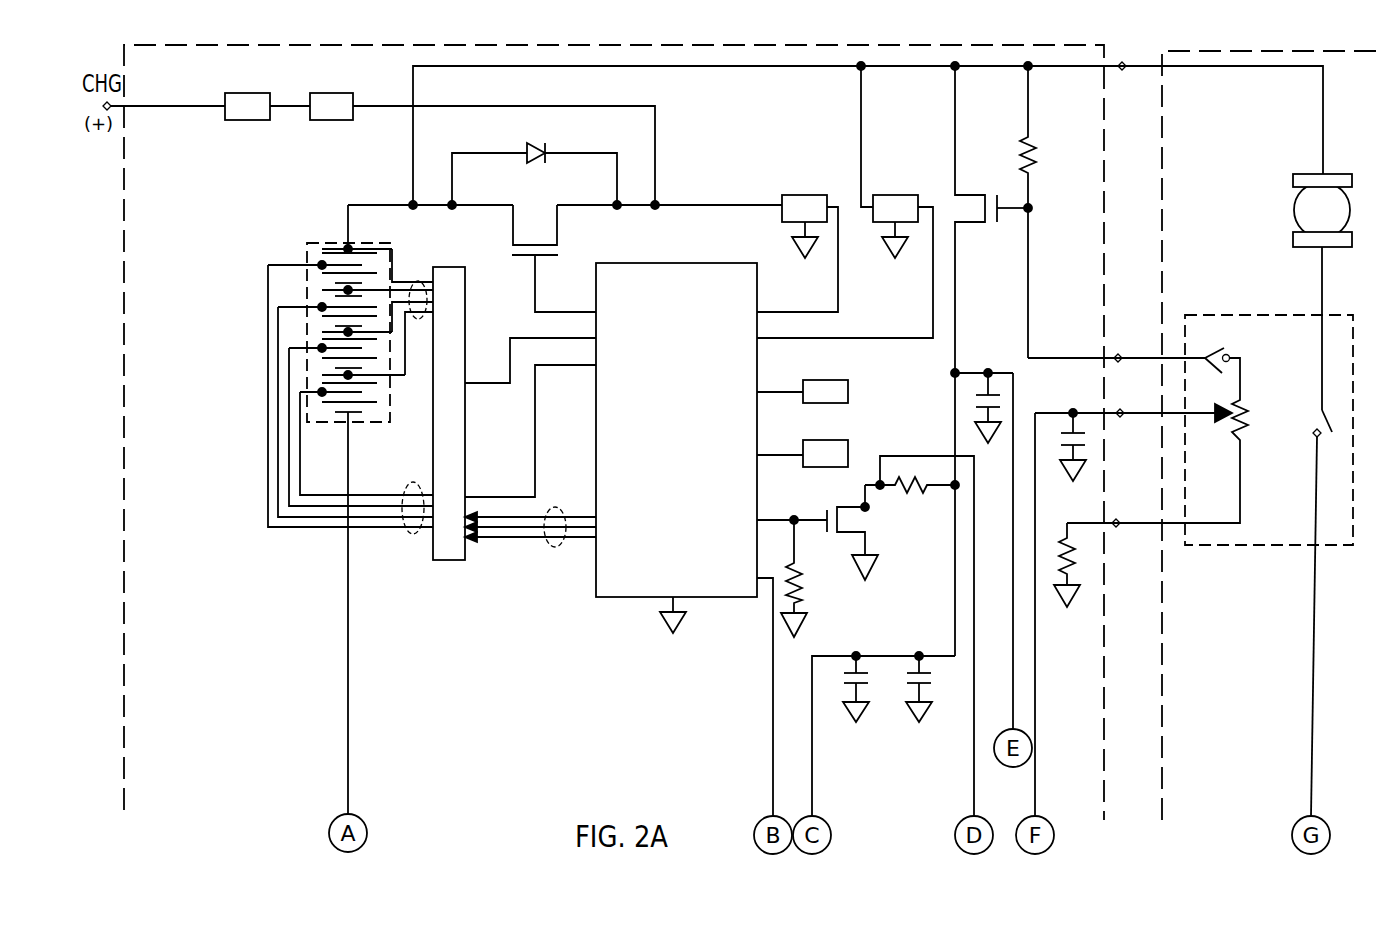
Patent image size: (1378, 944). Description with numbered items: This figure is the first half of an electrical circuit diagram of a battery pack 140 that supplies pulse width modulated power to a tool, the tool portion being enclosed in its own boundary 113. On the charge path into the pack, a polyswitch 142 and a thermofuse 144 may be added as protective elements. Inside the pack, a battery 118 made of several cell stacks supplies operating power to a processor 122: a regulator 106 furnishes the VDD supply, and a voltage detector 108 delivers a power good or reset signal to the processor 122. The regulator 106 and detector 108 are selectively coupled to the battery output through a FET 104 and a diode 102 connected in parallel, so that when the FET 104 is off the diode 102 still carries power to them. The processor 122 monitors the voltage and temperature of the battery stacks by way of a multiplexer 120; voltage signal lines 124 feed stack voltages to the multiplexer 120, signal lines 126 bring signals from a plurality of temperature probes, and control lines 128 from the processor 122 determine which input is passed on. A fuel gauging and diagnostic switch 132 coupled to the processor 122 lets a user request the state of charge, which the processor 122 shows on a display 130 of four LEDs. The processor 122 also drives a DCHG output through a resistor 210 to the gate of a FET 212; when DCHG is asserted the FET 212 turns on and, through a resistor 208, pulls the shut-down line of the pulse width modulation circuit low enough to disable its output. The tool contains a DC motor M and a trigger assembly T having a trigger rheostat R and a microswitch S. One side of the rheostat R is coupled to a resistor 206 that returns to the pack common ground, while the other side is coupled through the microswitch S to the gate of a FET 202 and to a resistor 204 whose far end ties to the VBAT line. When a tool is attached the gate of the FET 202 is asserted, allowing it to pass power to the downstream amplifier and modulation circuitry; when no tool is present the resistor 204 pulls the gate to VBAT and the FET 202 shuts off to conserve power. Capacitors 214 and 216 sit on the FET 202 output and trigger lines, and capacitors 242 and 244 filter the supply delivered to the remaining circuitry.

The battery pack 140 is at (625, 45).
The tool 113 is at (1122, 66).
The polyswitch 142 is at (263, 92).
The thermofuse 144 is at (348, 92).
The diode 102 is at (545, 150).
The FET 104 is at (558, 228).
The battery 118 is at (326, 243).
The voltage signal lines 124 is at (418, 280).
The multiplexer 120 is at (465, 405).
The signal lines 126 is at (413, 535).
The control lines 128 is at (555, 548).
The processor 122 is at (690, 262).
The voltage detector 108 is at (800, 195).
The regulator 106 is at (890, 195).
The FET 202 is at (970, 222).
The resistor 204 is at (1036, 137).
The capacitor 214 is at (982, 393).
The capacitor 216 is at (1068, 432).
The resistor 206 is at (1076, 563).
The display 130 is at (840, 380).
The fuel gauging/diagnostic switch 132 is at (840, 440).
The FET 212 is at (826, 512).
The resistor 208 is at (910, 492).
The resistor 210 is at (802, 590).
The capacitor 242 is at (850, 714).
The capacitor 244 is at (913, 714).
The trigger rheostat R is at (1250, 418).
The microswitch S is at (1212, 356).
The trigger assembly T is at (1210, 315).
The DC motor M is at (1322, 210).